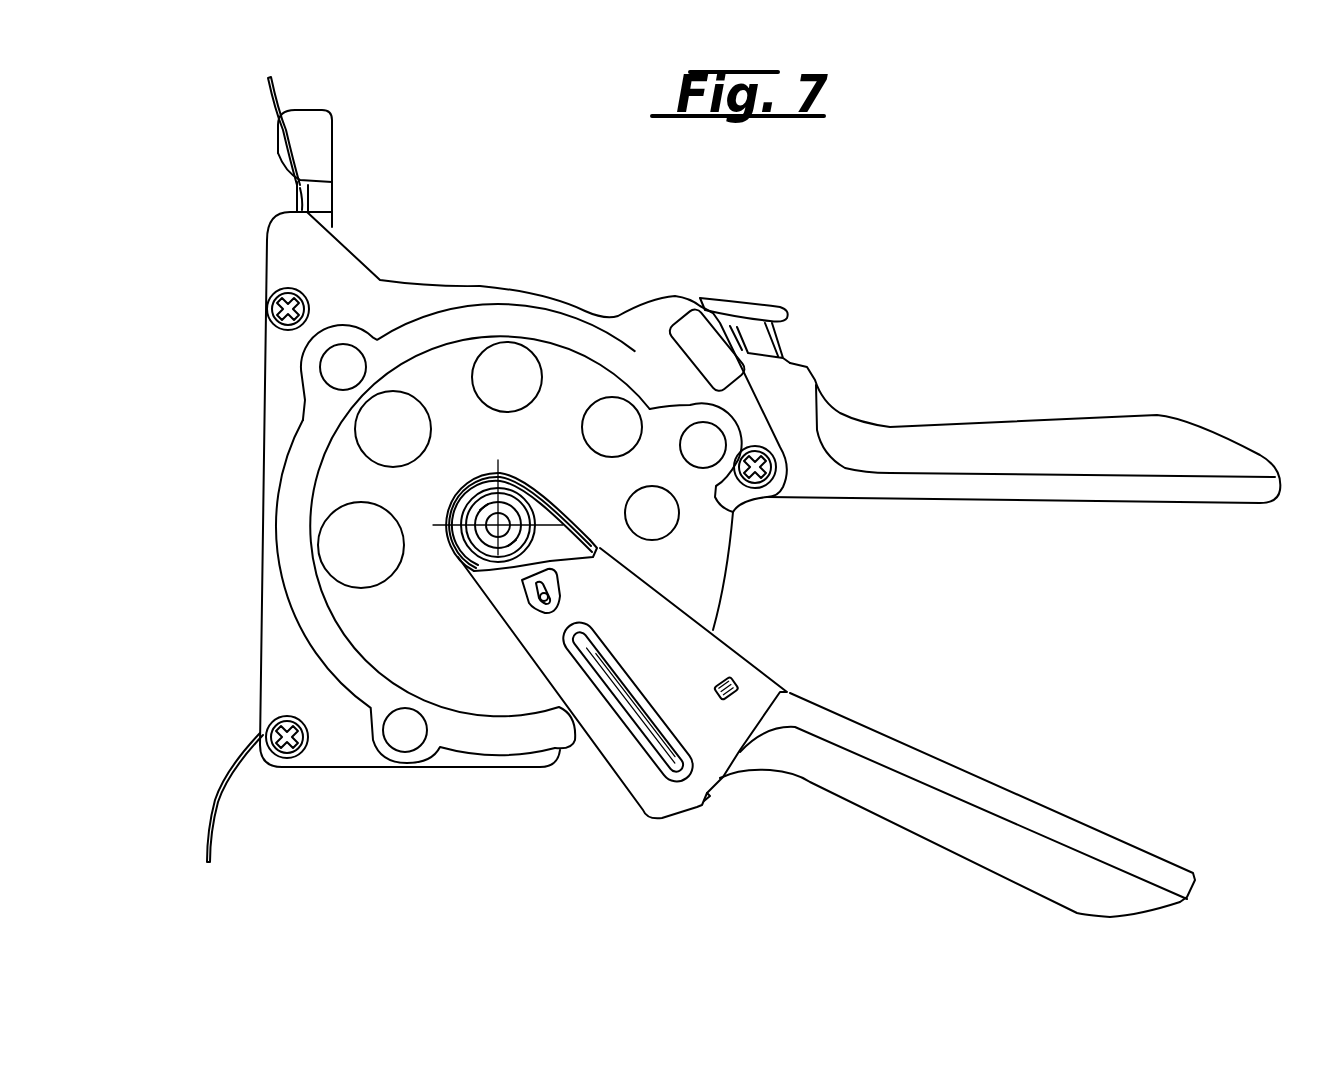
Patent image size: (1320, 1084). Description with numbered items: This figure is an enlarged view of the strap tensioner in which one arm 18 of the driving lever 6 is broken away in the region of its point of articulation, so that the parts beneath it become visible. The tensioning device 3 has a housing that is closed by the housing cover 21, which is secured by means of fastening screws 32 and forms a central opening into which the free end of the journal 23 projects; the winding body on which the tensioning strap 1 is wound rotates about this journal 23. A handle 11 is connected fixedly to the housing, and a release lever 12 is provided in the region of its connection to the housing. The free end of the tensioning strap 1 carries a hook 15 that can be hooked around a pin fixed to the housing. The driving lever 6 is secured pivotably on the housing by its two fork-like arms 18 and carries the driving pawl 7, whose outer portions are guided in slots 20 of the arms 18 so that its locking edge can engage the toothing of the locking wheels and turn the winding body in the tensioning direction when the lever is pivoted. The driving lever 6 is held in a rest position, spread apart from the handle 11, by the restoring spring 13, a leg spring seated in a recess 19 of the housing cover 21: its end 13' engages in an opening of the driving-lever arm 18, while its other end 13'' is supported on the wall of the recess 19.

The tensioning strap 1 is at (268, 85).
The tensioning device 3 is at (519, 264).
The driving lever 6 is at (1080, 878).
The driving pawl 7 is at (702, 805).
The handle 11 is at (1085, 443).
The release lever 12 is at (750, 300).
The restoring spring 13 is at (492, 454).
The end of the restoring spring 13' is at (589, 598).
The other end of the restoring spring 13'' is at (519, 493).
The hook 15 is at (313, 127).
The driving-lever arm 18 is at (670, 640).
The recess 19 is at (560, 550).
The slot 20 is at (583, 650).
The housing cover 21 is at (383, 303).
The journal 23 is at (480, 545).
The fastening screw 32 is at (278, 302).